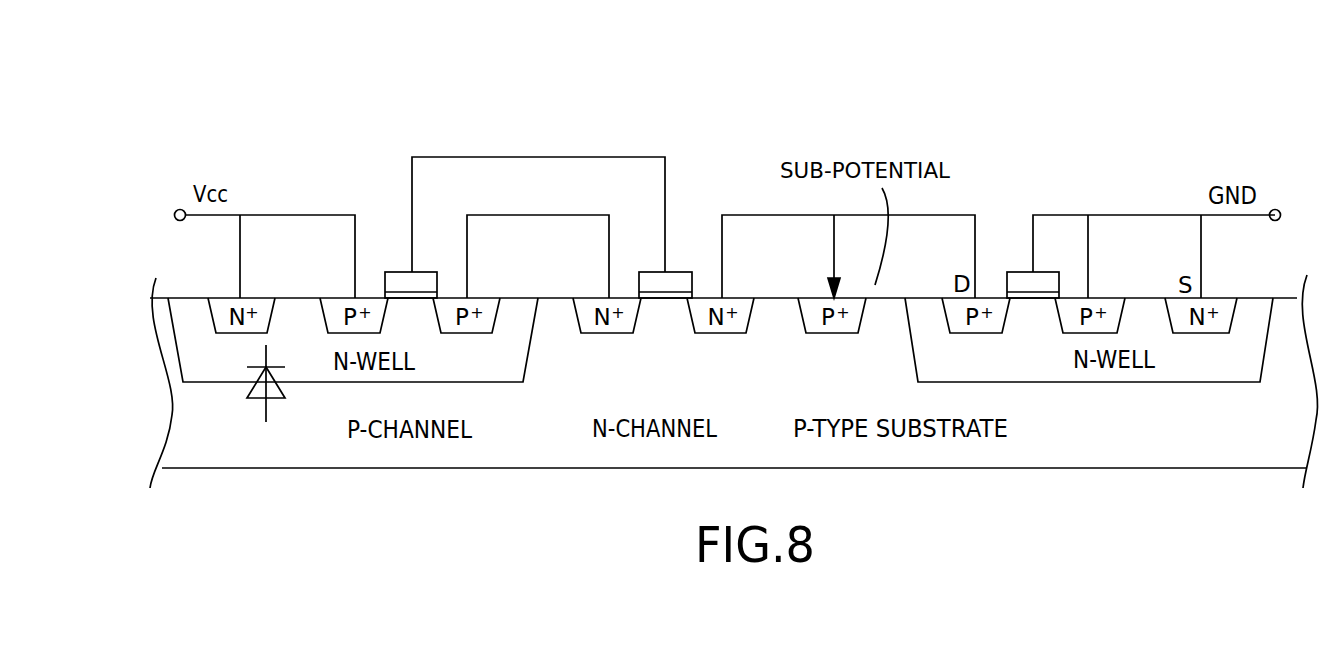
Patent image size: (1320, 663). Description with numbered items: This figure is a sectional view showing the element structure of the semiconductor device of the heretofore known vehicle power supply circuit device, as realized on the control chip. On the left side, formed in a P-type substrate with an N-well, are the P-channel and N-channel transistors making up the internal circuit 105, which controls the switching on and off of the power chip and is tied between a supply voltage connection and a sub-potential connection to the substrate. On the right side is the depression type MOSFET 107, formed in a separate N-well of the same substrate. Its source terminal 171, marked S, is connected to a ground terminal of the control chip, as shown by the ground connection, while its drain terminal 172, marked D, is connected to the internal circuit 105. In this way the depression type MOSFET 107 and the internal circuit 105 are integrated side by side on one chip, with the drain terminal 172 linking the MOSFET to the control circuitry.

The internal circuit 105 is at (552, 141).
The depression type MOSFET 107 is at (1094, 237).
The source terminal 171 is at (1203, 298).
The drain terminal 172 is at (978, 297).